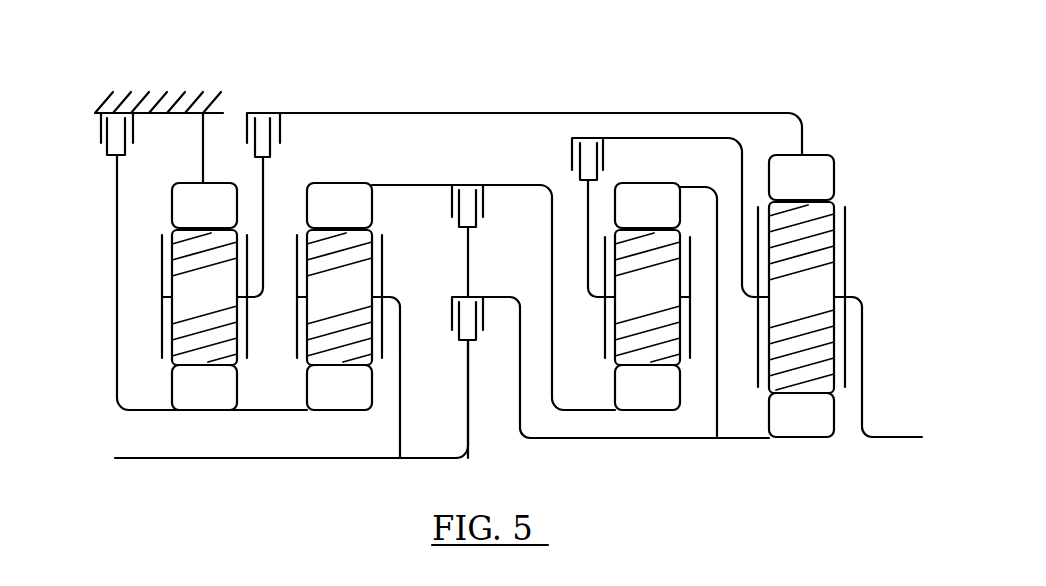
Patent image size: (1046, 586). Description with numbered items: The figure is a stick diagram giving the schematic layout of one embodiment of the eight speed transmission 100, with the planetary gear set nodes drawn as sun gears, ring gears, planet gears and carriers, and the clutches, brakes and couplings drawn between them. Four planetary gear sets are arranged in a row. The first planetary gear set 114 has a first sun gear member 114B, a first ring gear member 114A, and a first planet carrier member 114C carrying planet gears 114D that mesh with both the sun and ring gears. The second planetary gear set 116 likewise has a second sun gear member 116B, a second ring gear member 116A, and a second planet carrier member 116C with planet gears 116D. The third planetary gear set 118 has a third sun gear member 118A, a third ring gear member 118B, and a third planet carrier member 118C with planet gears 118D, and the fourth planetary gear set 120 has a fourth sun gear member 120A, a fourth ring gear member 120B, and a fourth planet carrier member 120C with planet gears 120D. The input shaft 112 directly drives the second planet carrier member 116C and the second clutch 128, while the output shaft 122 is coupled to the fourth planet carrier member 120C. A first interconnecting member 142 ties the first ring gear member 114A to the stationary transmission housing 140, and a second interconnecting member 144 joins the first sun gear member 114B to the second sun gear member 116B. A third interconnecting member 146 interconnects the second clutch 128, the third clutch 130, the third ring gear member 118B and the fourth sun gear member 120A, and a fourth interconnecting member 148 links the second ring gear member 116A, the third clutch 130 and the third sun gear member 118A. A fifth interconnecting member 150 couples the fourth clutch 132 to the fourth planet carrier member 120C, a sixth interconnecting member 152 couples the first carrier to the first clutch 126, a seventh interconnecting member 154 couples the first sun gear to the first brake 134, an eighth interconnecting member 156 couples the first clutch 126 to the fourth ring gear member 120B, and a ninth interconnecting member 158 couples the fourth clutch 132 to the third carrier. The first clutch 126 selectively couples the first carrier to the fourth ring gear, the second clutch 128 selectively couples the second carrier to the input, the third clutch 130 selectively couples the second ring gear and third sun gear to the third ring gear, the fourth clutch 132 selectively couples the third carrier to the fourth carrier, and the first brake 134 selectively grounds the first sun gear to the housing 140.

The eight speed transmission 100 is at (497, 269).
The input shaft 112 is at (188, 458).
The first planetary gear set 114 is at (184, 304).
The first ring gear member 114A is at (230, 215).
The first sun gear member 114B is at (230, 397).
The first planet carrier member 114C is at (160, 252).
The planet gears 114D is at (230, 304).
The second planetary gear set 116 is at (343, 320).
The second ring gear member 116A is at (365, 215).
The second sun gear member 116B is at (365, 397).
The second planet carrier member 116C is at (383, 257).
The planet gears 116D is at (365, 304).
The third planetary gear set 118 is at (644, 279).
The third sun gear member 118A is at (673, 397).
The third ring gear member 118B is at (673, 215).
The third planet carrier member 118C is at (692, 238).
The planet gears 118D is at (673, 304).
The fourth planetary gear set 120 is at (813, 319).
The fourth sun gear member 120A is at (827, 425).
The fourth ring gear member 120B is at (827, 187).
The fourth planet carrier member 120C is at (847, 228).
The planet gears 120D is at (827, 304).
The output shaft 122 is at (905, 440).
The first clutch 126 is at (282, 128).
The second clutch 128 is at (480, 313).
The third clutch 130 is at (460, 228).
The fourth clutch 132 is at (572, 163).
The first brake 134 is at (99, 136).
The transmission housing 140 is at (165, 97).
The first interconnecting member 142 is at (205, 135).
The second interconnecting member 144 is at (258, 410).
The third interconnecting member 146 is at (557, 440).
The fourth interconnecting member 148 is at (428, 184).
The fifth interconnecting member 150 is at (645, 138).
The sixth interconnecting member 152 is at (267, 211).
The seventh interconnecting member 154 is at (115, 232).
The eighth interconnecting member 156 is at (450, 113).
The ninth interconnecting member 158 is at (586, 250).